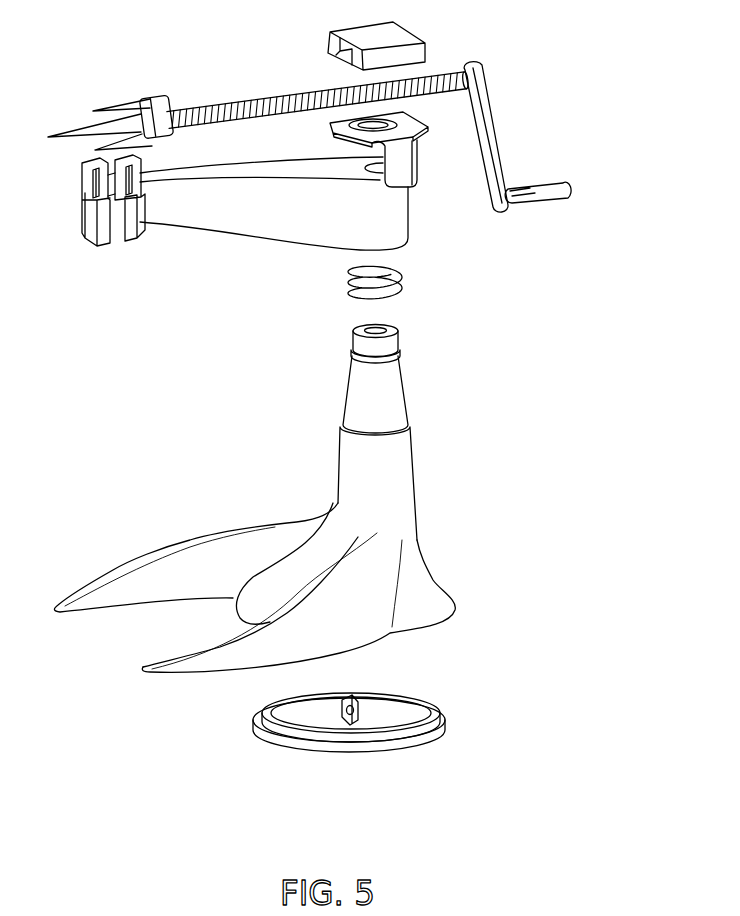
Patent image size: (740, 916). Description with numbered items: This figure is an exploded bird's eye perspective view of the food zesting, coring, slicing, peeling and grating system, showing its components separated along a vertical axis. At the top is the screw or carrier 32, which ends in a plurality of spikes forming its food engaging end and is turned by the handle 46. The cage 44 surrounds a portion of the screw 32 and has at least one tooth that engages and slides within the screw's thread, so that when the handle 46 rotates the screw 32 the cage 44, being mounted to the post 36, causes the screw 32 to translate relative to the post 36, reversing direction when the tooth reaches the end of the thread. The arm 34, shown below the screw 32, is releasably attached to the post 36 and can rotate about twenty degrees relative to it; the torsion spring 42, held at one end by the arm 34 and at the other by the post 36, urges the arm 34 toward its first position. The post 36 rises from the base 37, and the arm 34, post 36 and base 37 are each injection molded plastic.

The screw or carrier 32 is at (207, 108).
The arm 34 is at (203, 210).
The post 36 is at (398, 336).
The base 37 is at (378, 570).
The torsion spring 42 is at (405, 279).
The cage 44 is at (414, 158).
The handle 46 is at (547, 185).